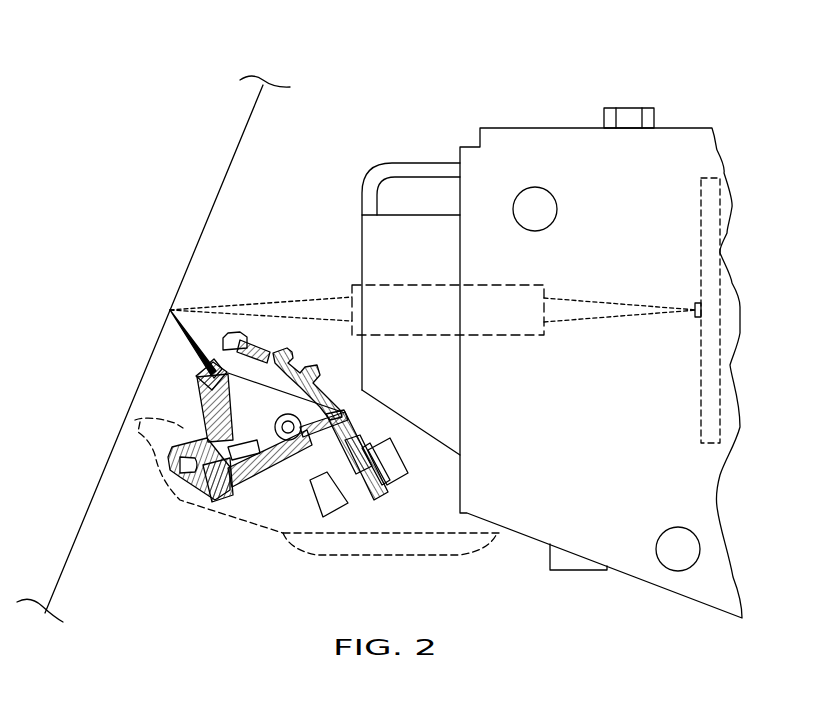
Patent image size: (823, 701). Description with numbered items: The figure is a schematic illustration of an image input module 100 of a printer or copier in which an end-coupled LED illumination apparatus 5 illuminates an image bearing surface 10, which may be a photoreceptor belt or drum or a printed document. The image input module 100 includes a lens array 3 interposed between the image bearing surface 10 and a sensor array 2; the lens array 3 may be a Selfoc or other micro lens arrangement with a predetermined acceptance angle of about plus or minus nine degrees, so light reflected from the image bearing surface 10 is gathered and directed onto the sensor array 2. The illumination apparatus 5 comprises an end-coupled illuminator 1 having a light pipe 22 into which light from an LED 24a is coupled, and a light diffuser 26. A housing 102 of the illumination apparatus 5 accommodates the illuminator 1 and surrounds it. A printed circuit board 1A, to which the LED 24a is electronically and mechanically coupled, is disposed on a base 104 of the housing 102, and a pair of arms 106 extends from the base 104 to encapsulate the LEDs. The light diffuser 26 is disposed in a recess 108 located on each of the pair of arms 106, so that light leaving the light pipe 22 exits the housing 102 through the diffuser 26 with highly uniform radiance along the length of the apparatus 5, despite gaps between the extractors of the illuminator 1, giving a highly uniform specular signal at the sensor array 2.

The image bearing surface 10 is at (222, 183).
The image input module 100 is at (568, 83).
The lens array 3 is at (526, 286).
The sensor array 2 is at (697, 305).
The light diffuser 26 is at (205, 365).
The recess 108 is at (252, 346).
The pair of arms 106 is at (310, 376).
The end-coupled illuminator 1 is at (263, 435).
The LED 24a is at (337, 415).
The light pipe 22 is at (267, 473).
The printed circuit board 1A is at (293, 467).
The base 104 is at (230, 493).
The housing 102 is at (185, 461).
The illumination apparatus 5 is at (189, 530).